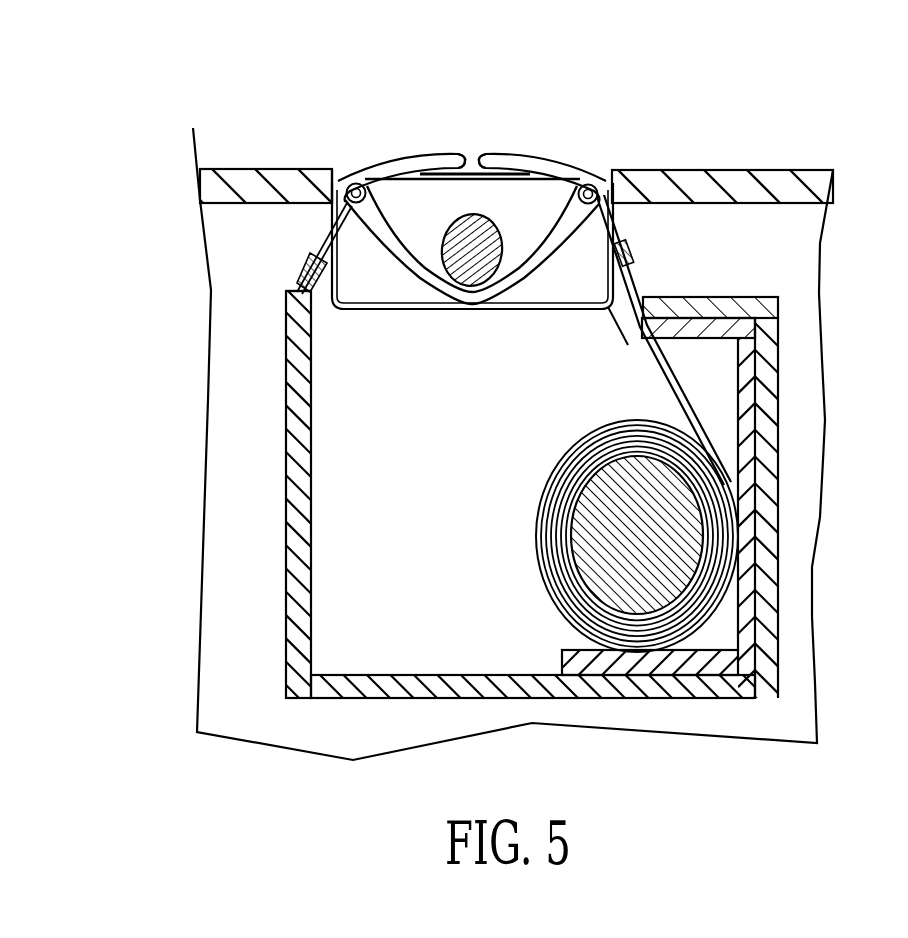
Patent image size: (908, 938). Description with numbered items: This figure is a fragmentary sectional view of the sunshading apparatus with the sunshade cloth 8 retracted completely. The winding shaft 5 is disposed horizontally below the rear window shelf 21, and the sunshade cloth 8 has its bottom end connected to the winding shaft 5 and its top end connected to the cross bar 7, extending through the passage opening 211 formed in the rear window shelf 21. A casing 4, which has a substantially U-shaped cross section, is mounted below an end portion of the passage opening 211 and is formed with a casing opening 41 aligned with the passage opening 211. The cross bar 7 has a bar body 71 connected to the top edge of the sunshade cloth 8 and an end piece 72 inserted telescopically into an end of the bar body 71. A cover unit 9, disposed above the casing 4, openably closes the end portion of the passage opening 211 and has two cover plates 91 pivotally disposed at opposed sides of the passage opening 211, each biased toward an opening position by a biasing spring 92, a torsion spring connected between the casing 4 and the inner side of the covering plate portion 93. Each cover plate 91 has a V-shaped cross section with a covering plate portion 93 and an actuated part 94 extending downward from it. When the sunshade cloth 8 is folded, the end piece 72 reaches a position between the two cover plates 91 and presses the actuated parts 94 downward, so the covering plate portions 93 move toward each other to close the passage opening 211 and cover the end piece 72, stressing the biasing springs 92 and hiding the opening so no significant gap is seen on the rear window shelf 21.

The casing 4 is at (281, 486).
The casing opening 41 is at (323, 298).
The winding shaft 5 is at (675, 517).
The cross bar 7 is at (377, 317).
The bar body 71 is at (348, 238).
The end piece 72 is at (480, 242).
The sunshade cloth 8 is at (668, 383).
The cover unit 9 is at (486, 114).
The cover plate 91 is at (382, 150).
The biasing spring 92 is at (347, 200).
The covering plate portion 93 is at (430, 165).
The actuated part 94 is at (393, 252).
The rear window shelf 21 is at (718, 160).
The passage opening 211 is at (336, 205).